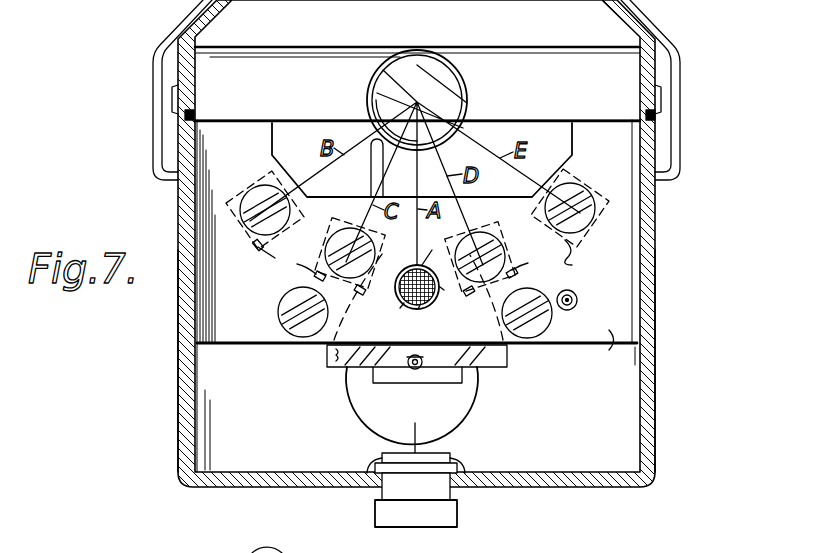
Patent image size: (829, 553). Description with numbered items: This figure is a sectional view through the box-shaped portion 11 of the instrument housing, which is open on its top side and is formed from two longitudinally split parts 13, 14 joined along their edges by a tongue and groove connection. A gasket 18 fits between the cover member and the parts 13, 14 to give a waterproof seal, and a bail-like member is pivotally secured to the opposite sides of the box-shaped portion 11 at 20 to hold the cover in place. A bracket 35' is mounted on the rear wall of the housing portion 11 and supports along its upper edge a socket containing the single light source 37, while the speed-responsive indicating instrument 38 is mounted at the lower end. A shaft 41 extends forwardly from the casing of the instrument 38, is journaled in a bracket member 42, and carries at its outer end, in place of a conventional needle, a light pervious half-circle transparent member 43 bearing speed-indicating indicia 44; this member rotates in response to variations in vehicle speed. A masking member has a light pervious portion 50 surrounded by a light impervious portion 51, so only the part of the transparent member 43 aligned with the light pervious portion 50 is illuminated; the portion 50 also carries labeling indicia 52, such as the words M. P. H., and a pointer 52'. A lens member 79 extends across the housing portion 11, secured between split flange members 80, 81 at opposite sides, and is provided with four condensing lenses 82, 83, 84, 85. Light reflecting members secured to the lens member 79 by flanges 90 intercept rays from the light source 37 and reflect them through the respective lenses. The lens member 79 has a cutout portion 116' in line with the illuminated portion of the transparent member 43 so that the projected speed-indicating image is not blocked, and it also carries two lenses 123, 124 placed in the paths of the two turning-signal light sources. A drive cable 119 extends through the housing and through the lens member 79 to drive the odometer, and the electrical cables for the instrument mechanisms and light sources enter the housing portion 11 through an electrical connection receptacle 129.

The box-shaped portion 11 is at (670, 258).
The housing part 13 is at (652, 399).
The housing part 14 is at (178, 405).
The gasket 18 is at (655, 116).
The pivot 20 is at (176, 183).
The bracket 35' is at (422, 160).
The light source 37 is at (458, 88).
The speed-responsive indicating instrument 38 is at (466, 392).
The shaft 41 is at (408, 369).
The bracket member 42 is at (422, 370).
The transparent member 43 is at (503, 349).
The speed-indicating indicia 44 is at (327, 356).
The light pervious portion 50 is at (412, 265).
The light impervious portion 51 is at (400, 308).
The labeling indicia 52 is at (435, 247).
The pointer 52' is at (466, 308).
The lens member 79 is at (417, 352).
The split flange member 80 is at (638, 320).
The split flange member 81 is at (198, 315).
The condensing lens 82 is at (260, 190).
The condensing lens 83 is at (333, 243).
The condensing lens 84 is at (490, 239).
The condensing lens 85 is at (582, 200).
The flange 90 is at (412, 267).
The cutout portion 116' is at (446, 317).
The drive cable 119 is at (586, 281).
The lens 123 is at (538, 335).
The lens 124 is at (287, 328).
The electrical connection receptacle 129 is at (380, 494).